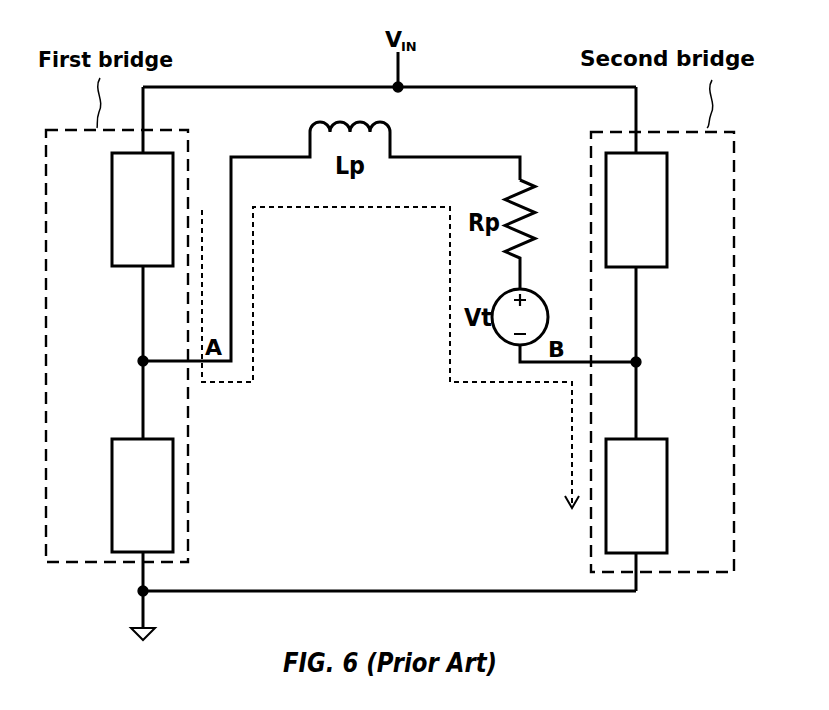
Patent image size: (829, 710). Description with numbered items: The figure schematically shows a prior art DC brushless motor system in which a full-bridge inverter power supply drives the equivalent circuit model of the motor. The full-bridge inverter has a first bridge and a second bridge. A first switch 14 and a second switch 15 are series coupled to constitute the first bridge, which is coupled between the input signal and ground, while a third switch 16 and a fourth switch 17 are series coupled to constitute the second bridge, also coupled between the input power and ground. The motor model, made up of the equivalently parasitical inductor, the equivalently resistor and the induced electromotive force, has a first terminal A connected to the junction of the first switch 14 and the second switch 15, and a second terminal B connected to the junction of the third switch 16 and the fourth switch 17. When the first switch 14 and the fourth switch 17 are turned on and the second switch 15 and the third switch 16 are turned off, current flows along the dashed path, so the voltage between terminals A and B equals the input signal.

The first switch 14 is at (106, 172).
The second switch 15 is at (106, 534).
The third switch 16 is at (672, 158).
The fourth switch 17 is at (672, 543).